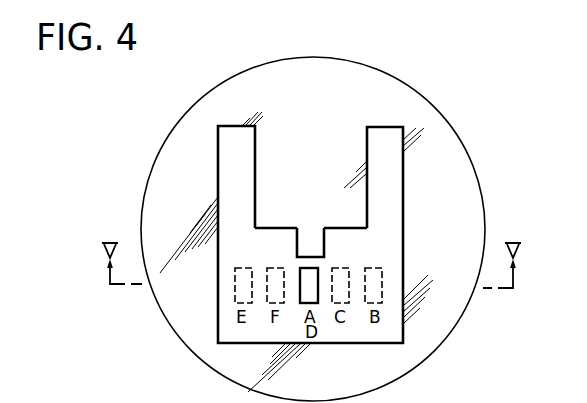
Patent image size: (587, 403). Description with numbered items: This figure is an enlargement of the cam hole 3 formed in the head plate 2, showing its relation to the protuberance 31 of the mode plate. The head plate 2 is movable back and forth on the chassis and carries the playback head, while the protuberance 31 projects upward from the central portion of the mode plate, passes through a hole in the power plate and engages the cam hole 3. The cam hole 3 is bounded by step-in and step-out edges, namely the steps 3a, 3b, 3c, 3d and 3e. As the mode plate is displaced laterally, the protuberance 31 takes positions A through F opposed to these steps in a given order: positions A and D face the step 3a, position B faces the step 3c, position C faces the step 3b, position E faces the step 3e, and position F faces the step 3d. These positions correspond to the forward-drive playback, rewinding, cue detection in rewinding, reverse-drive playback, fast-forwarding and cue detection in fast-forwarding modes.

The head plate 2 is at (317, 108).
The cam hole 3 is at (401, 227).
The step 3a is at (310, 243).
The step 3b is at (345, 215).
The step 3c is at (384, 163).
The step 3d is at (276, 215).
The step 3e is at (240, 163).
The protuberance 31 is at (312, 272).